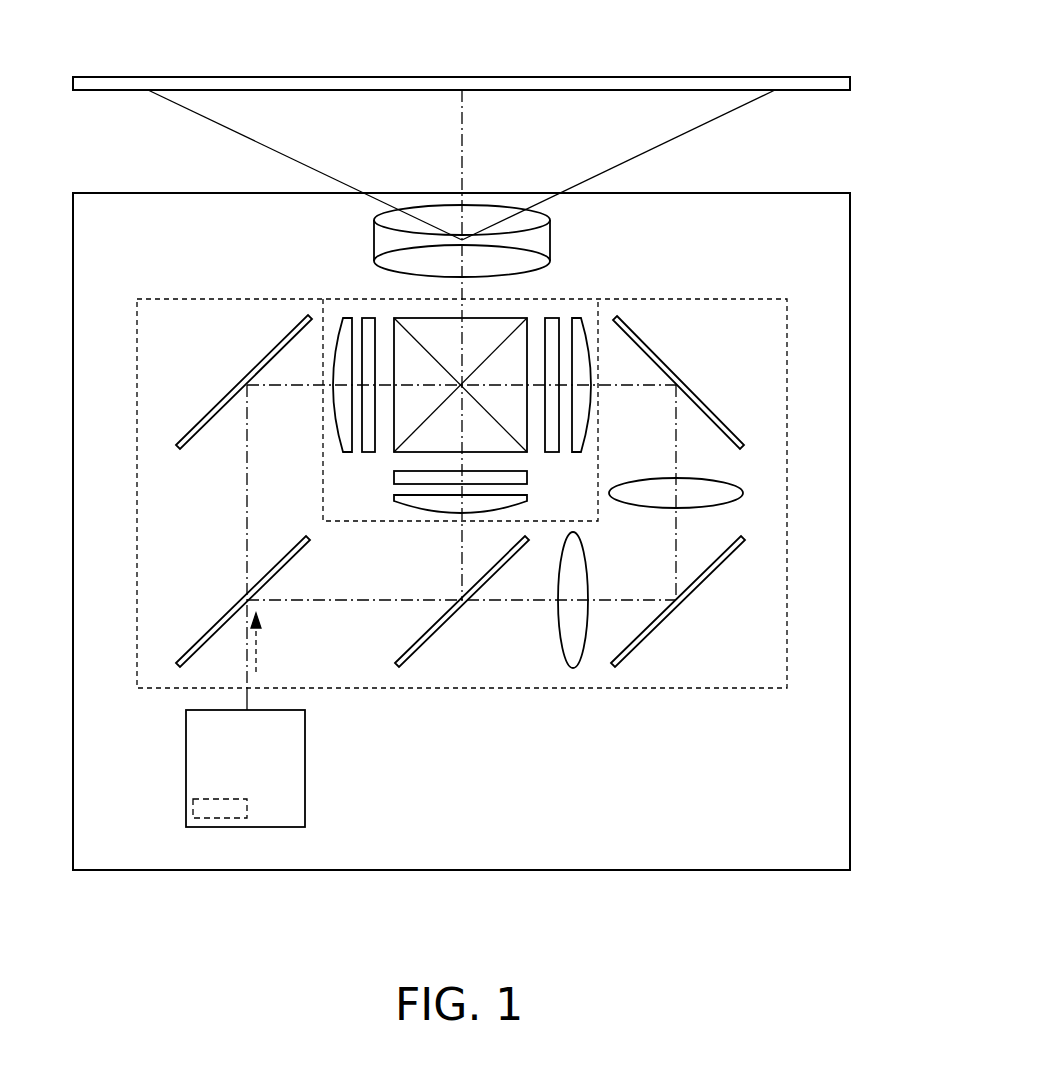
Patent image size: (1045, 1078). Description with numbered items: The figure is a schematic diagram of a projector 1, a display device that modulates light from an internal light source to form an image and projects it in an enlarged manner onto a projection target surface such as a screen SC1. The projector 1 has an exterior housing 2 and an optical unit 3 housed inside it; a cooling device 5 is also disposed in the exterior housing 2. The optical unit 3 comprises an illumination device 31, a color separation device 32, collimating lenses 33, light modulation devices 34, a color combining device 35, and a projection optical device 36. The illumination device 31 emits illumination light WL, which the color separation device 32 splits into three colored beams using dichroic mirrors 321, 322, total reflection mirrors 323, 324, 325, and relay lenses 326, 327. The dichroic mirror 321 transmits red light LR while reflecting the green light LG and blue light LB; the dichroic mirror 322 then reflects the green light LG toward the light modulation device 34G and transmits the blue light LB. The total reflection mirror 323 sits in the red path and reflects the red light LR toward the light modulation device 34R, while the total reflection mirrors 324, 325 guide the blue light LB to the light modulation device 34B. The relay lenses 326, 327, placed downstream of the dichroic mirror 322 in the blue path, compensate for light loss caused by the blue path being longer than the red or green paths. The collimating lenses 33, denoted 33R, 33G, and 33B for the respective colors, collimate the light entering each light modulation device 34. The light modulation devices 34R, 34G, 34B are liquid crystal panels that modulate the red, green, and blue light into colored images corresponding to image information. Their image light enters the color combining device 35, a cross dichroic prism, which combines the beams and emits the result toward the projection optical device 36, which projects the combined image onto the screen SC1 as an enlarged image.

The projector 1 is at (845, 165).
The exterior housing 2 is at (850, 445).
The optical unit 3 is at (705, 760).
The cooling device 5 is at (227, 818).
The illumination device 31 is at (305, 766).
The color separation device 32 is at (477, 690).
The dichroic mirror 321 is at (214, 630).
The dichroic mirror 322 is at (440, 632).
The total reflection mirror 323 is at (227, 397).
The total reflection mirror 324 is at (700, 583).
The total reflection mirror 325 is at (705, 403).
The relay lens 326 is at (575, 652).
The relay lens 327 is at (706, 480).
The collimating lens 33 is at (474, 424).
The collimating lens for red light 33R is at (345, 318).
The collimating lens for green light 33G is at (394, 503).
The collimating lens for blue light 33B is at (574, 318).
The light modulation device 34 is at (466, 366).
The light modulation device for red light 34R is at (367, 318).
The light modulation device for green light 34G is at (394, 478).
The light modulation device for blue light 34B is at (552, 318).
The color combining device 35 is at (485, 325).
The projection optical device 36 is at (550, 240).
The screen SC1 is at (817, 86).
The illumination light WL is at (262, 650).
The red light LR is at (245, 513).
The green light LG is at (460, 555).
The blue light LB is at (638, 599).